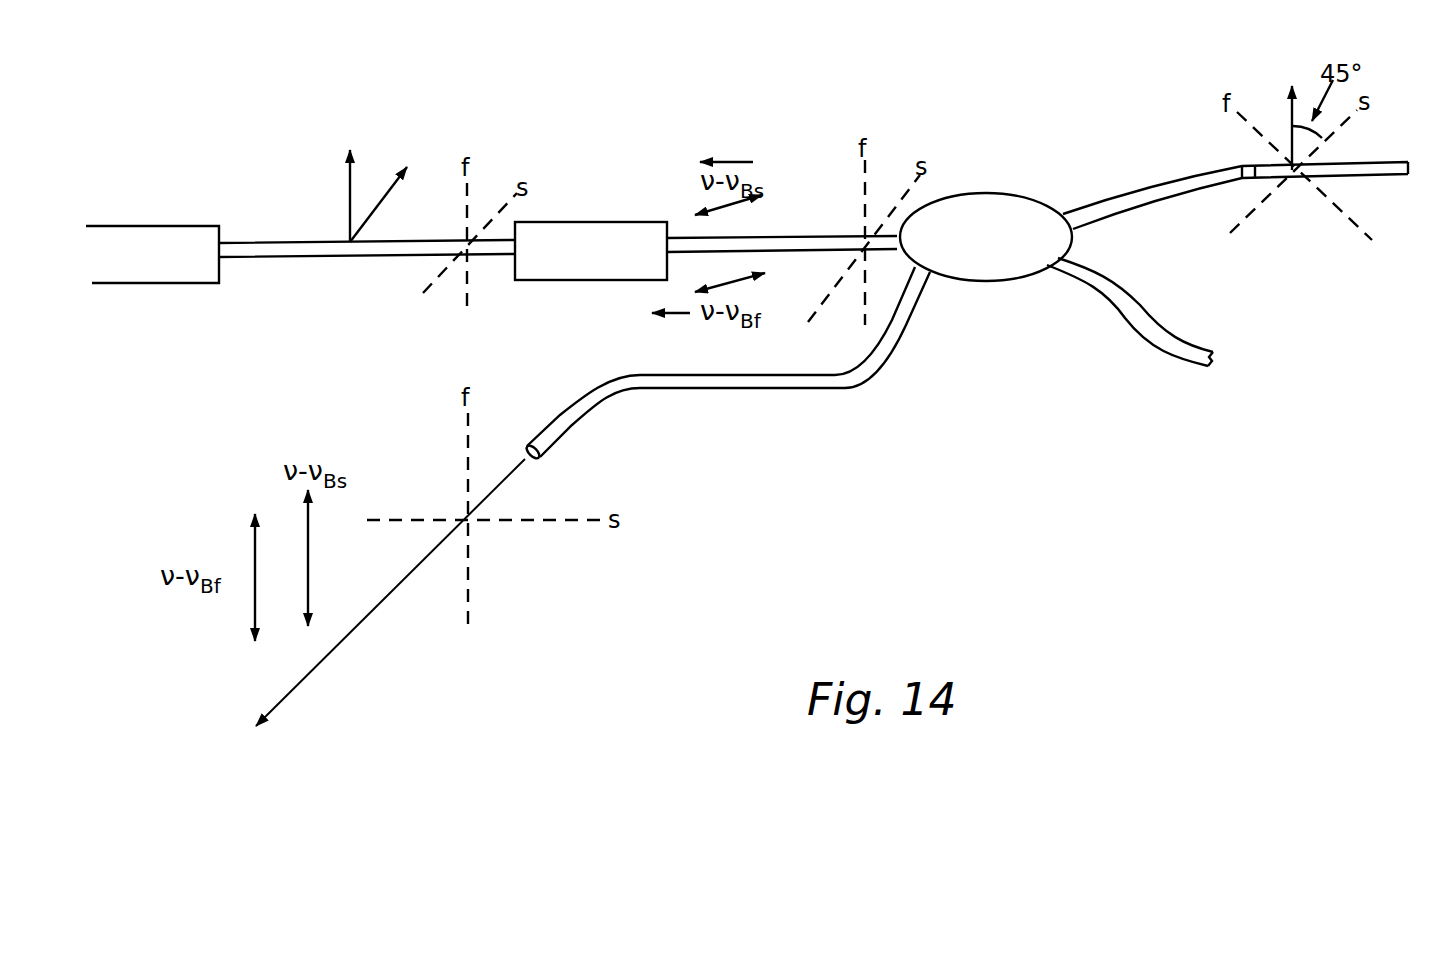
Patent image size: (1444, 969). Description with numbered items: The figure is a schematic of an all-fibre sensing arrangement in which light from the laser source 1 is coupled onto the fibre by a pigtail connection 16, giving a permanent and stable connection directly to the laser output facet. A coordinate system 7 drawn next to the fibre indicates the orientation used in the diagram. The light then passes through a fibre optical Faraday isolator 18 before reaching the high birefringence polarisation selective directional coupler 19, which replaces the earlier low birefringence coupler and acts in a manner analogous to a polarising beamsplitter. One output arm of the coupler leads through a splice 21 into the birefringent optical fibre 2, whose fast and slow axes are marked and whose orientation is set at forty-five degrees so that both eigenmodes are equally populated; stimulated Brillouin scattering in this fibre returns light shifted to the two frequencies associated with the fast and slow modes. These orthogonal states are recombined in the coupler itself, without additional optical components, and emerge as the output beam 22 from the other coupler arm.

The laser source 1 is at (156, 217).
The pigtail connection 16 is at (224, 228).
The coordinate system 7 is at (370, 168).
The fibre optical Faraday isolator 18 is at (591, 215).
The high birefringence polarisation selective directional coupler 19 is at (973, 192).
The fiber splice 21 is at (1243, 184).
The birefringent optical fibre 2 is at (1398, 180).
The output light beam 22 is at (322, 590).